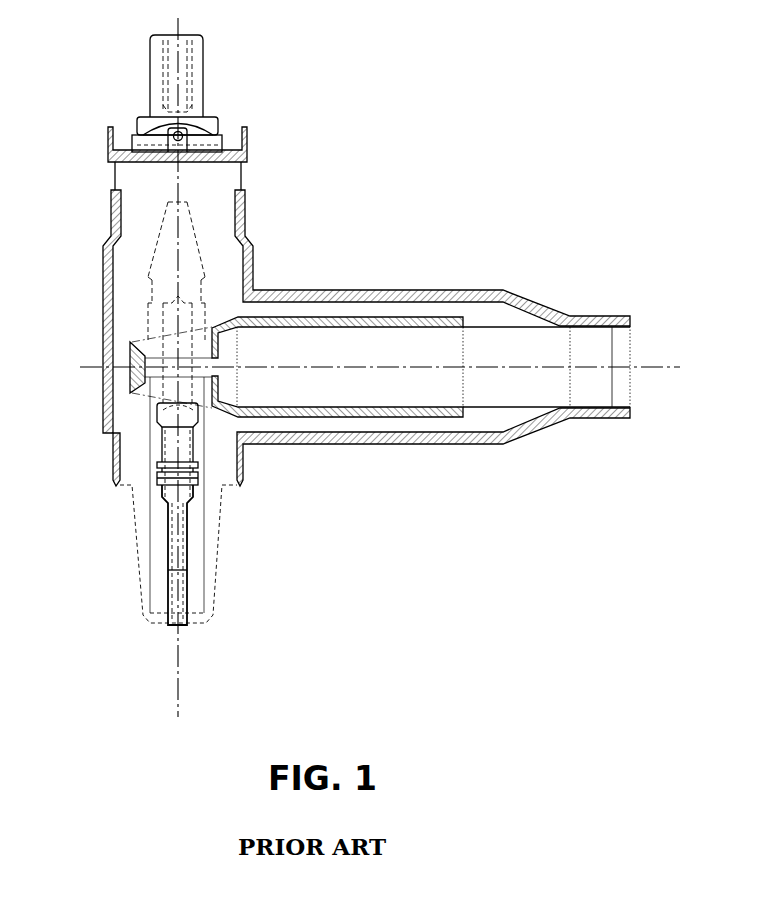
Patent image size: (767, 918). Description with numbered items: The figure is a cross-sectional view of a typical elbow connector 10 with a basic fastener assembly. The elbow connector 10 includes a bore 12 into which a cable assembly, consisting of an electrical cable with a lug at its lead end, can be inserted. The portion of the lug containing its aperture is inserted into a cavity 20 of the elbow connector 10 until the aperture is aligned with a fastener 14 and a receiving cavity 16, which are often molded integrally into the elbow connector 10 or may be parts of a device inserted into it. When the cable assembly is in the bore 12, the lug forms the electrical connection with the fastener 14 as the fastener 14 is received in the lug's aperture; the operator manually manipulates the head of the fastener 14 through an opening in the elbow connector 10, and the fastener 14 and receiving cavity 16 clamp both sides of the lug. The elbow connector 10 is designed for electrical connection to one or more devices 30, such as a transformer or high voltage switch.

The elbow connector 10 is at (574, 114).
The bore 12 is at (597, 340).
The fastener 14 is at (178, 455).
The receiving cavity 16 is at (181, 319).
The cavity 20 is at (157, 371).
The device 30 is at (218, 117).